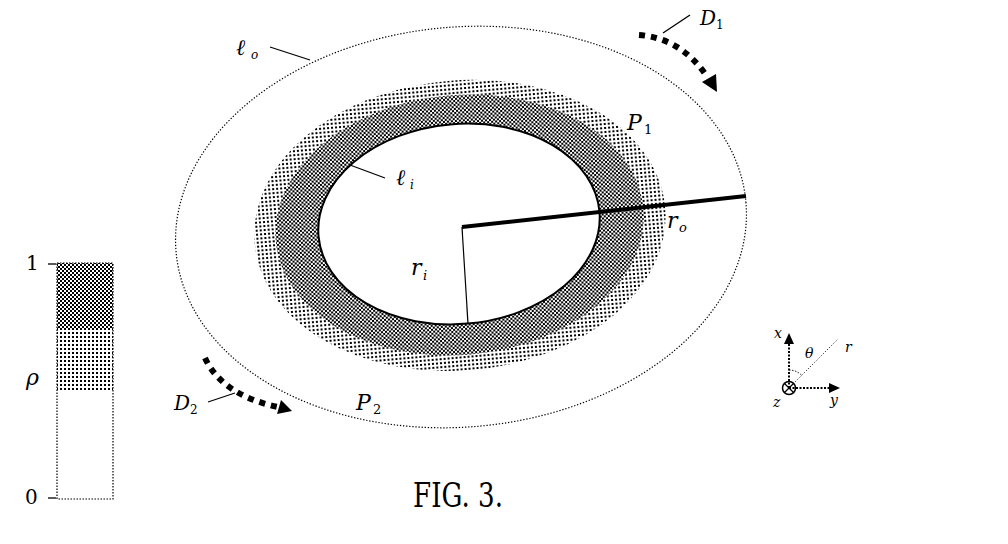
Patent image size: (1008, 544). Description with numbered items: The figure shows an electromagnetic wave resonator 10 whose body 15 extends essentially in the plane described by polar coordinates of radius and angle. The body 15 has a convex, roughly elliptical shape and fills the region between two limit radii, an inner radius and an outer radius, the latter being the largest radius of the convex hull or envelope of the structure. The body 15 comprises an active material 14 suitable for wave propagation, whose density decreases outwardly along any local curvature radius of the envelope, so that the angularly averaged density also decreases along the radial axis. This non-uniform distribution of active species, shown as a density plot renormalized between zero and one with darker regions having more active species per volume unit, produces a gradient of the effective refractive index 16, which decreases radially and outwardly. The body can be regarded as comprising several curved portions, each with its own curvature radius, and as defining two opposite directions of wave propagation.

The electromagnetic wave resonator 10 is at (750, 135).
The active material 14 is at (444, 391).
The body 15 is at (480, 391).
The effective refractive index 16 is at (241, 179).